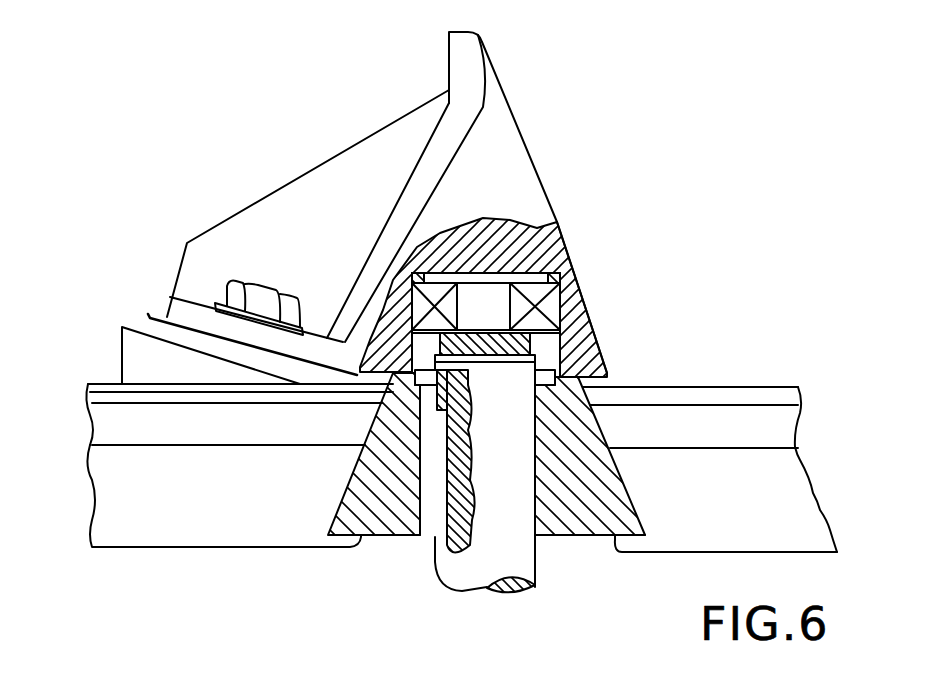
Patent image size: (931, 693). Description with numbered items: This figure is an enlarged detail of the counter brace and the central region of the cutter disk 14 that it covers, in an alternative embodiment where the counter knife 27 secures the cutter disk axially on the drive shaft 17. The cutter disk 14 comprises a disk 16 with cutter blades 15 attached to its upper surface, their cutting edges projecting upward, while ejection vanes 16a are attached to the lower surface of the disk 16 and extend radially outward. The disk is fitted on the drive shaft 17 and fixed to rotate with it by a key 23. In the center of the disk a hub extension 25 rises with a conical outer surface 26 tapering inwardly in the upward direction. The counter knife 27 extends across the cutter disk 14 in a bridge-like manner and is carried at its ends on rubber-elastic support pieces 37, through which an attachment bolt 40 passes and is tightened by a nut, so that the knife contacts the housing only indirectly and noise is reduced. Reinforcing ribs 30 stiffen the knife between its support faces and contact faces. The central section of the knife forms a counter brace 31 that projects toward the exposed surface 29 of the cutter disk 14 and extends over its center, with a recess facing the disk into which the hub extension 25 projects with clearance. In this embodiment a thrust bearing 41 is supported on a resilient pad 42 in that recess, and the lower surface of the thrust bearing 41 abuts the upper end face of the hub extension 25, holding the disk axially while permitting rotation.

The cutter disk 14 is at (787, 467).
The cutter blades 15 is at (105, 393).
The disk 16 is at (102, 428).
The ejection vanes 16a is at (113, 508).
The drive shaft 17 is at (533, 558).
The key 23 is at (428, 517).
The hub extension 25 is at (604, 527).
The conical outer surface 26 is at (633, 503).
The counter knife 27 is at (467, 112).
The exposed surface 29 is at (627, 376).
The reinforcing ribs 30 is at (333, 172).
The counter brace 31 is at (513, 152).
The support pieces 37 is at (158, 320).
The attachment bolt 40 is at (265, 298).
The thrust bearing 41 is at (551, 302).
The resilient pad 42 is at (565, 265).